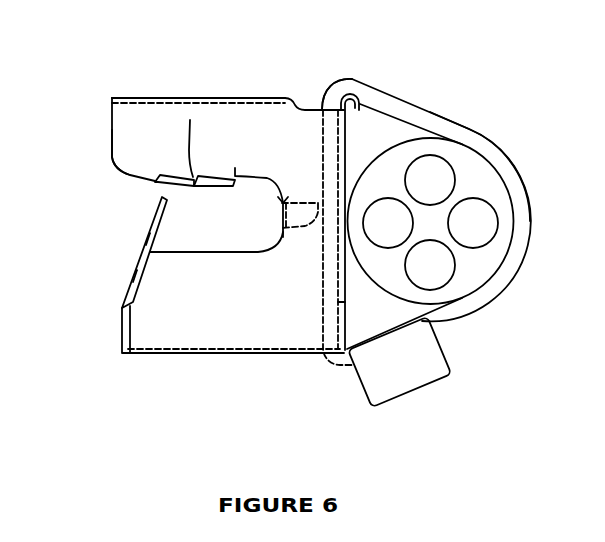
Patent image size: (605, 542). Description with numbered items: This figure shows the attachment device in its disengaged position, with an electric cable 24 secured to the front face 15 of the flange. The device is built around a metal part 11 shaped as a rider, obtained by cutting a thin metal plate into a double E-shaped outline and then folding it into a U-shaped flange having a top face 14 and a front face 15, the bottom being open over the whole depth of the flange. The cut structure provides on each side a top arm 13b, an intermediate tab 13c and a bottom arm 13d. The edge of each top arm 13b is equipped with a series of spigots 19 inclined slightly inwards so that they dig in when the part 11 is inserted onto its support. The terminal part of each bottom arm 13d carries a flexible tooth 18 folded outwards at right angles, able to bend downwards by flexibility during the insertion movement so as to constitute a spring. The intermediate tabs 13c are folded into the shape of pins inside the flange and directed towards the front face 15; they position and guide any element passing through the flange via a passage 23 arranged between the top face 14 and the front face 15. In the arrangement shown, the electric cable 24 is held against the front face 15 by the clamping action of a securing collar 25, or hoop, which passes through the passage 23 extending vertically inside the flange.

The metal part 11 is at (118, 184).
The top arm 13b is at (225, 140).
The intermediate tab 13c is at (303, 216).
The bottom arm 13d is at (223, 322).
The top face 14 is at (163, 102).
The front face 15 is at (348, 147).
The flexible tooth 18 is at (147, 232).
The spigot 19 is at (190, 120).
The passage 23 is at (303, 108).
The electric cable 24 is at (467, 182).
The securing collar 25 is at (457, 123).